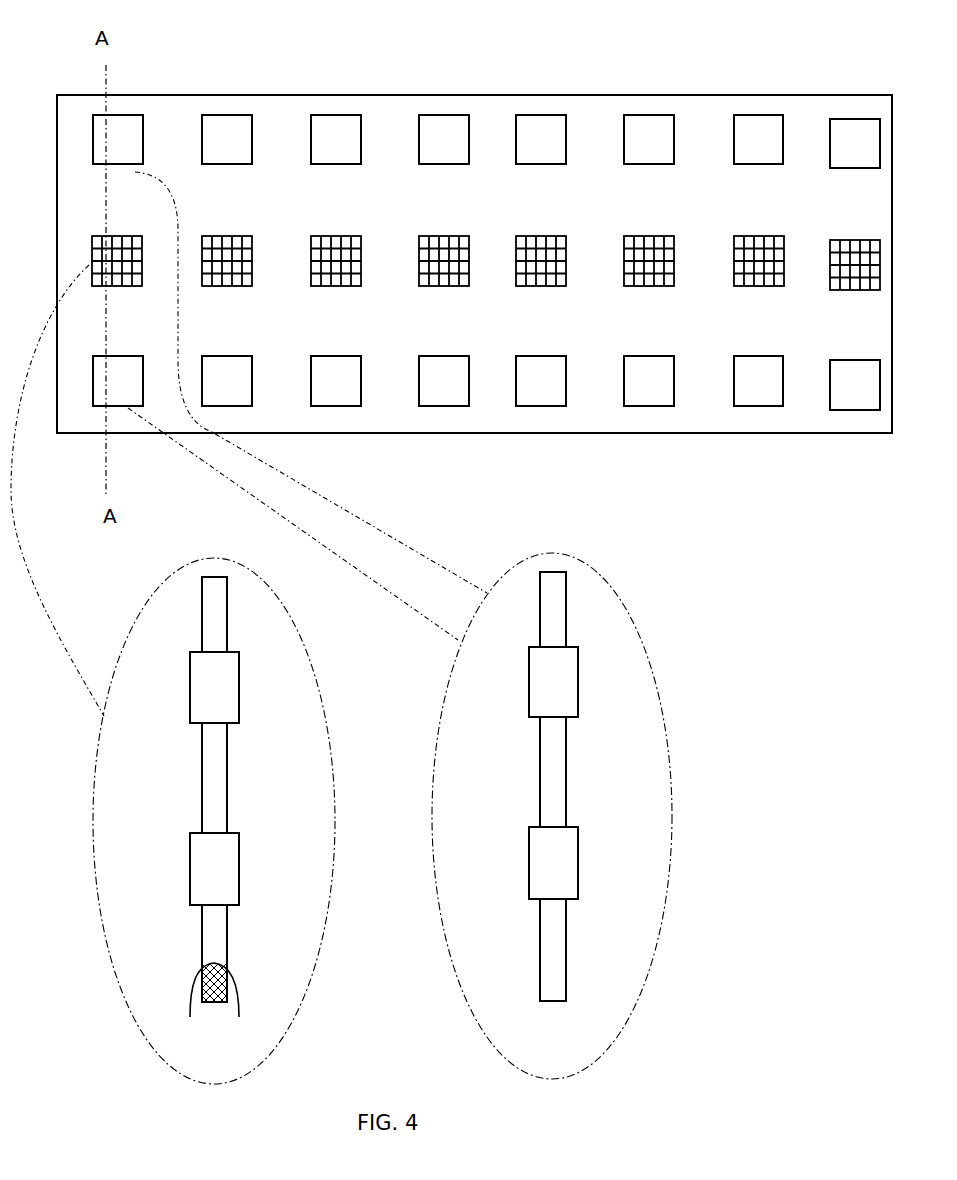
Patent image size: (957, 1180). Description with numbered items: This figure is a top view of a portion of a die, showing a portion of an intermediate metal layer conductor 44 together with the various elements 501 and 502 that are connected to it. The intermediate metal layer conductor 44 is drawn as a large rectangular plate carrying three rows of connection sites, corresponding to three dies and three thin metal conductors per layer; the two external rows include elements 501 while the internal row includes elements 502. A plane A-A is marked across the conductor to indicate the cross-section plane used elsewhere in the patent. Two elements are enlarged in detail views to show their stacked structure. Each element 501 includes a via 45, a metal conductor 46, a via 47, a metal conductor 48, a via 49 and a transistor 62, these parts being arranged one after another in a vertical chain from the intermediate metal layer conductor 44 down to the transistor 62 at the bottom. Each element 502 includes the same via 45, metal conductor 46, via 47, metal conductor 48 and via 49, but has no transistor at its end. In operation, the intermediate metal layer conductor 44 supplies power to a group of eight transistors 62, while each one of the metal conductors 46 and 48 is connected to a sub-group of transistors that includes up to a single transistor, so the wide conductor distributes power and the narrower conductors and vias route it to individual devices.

The intermediate metal layer conductor 44 is at (463, 324).
The via 45 is at (201, 618).
The metal conductor 46 is at (203, 699).
The via 47 is at (201, 781).
The metal conductor 48 is at (203, 879).
The via 49 is at (201, 953).
The transistor 62 is at (190, 1017).
The element 501 is at (196, 1072).
The element 502 is at (534, 1069).